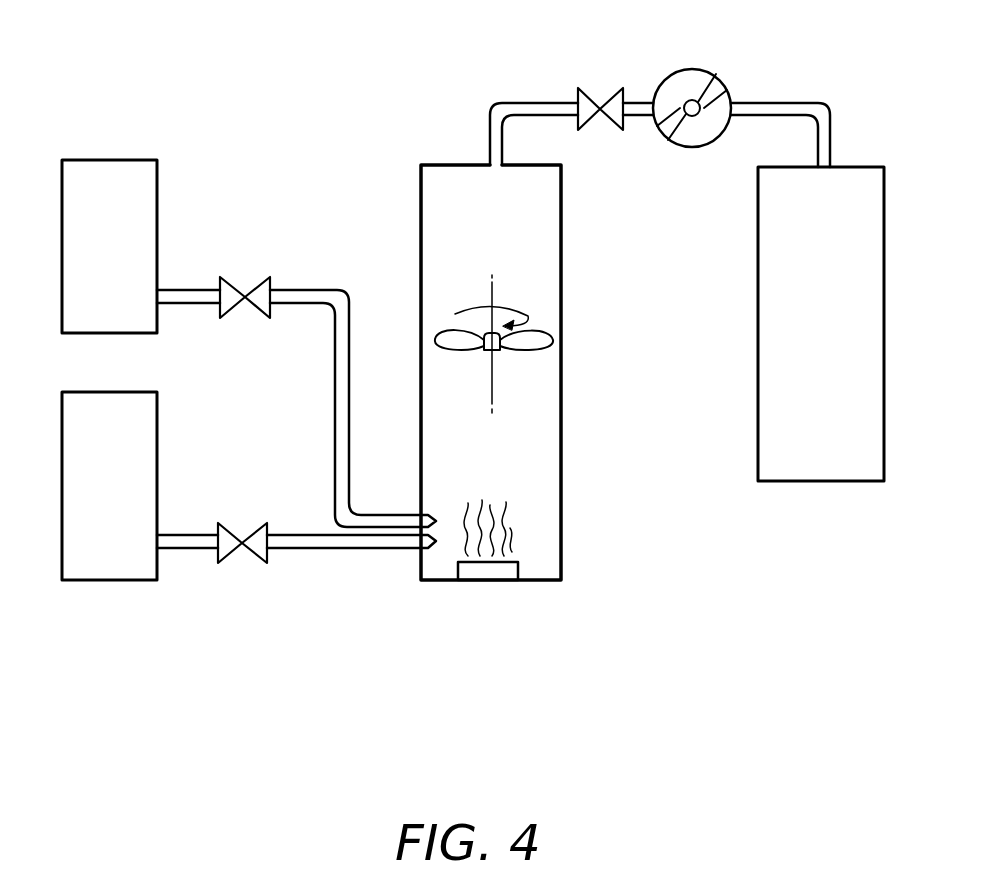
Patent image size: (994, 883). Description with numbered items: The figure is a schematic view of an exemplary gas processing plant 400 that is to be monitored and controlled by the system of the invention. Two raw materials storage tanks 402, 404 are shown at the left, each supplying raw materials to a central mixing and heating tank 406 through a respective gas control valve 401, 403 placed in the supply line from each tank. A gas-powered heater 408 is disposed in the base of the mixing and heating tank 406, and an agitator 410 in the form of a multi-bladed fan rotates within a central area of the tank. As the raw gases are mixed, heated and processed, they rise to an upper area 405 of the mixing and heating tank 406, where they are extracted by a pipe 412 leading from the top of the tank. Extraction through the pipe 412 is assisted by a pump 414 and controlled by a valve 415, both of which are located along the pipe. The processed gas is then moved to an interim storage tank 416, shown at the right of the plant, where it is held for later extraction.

The gas processing plant 400 is at (473, 399).
The gas control valve 401 is at (244, 292).
The raw materials storage tank 402 is at (157, 188).
The gas control valve 403 is at (247, 561).
The raw materials storage tank 404 is at (157, 457).
The upper area 405 is at (491, 372).
The mixing and heating tank 406 is at (564, 443).
The gas-powered heater 408 is at (495, 582).
The agitator 410 is at (538, 330).
The pipe 412 is at (489, 113).
The pump 414 is at (700, 70).
The valve 415 is at (600, 88).
The interim storage tank 416 is at (823, 482).